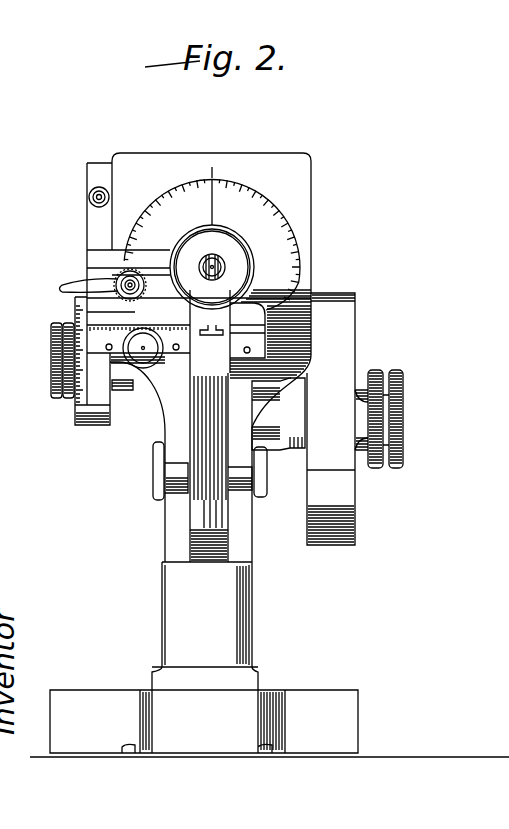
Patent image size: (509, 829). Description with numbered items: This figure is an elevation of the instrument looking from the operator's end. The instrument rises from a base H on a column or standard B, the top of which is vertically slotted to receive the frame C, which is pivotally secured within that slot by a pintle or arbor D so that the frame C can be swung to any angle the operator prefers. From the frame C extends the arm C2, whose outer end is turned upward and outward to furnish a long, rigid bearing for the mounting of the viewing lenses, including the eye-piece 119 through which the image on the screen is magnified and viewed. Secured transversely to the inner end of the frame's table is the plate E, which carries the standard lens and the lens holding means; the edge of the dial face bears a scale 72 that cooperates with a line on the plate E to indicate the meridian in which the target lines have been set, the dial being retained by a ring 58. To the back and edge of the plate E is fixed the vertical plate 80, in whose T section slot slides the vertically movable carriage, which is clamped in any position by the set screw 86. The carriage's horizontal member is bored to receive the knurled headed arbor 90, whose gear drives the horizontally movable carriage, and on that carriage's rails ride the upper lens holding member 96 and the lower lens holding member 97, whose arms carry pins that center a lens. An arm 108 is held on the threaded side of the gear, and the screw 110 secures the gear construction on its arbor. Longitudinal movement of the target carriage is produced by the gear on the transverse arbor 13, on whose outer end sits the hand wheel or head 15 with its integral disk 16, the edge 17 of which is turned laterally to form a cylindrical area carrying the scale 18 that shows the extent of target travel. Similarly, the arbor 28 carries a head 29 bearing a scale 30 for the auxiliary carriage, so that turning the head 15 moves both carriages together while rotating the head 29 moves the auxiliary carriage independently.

The plate E is at (158, 158).
The set screw 86 is at (89, 197).
The vertical plate 80 is at (88, 241).
The upper lens holding member 96 is at (88, 260).
The arm 108 is at (63, 289).
The screw 110 is at (199, 325).
The lower lens holding member 97 is at (100, 308).
The head 29 is at (52, 386).
The scale 30 is at (73, 411).
The arbor 28 is at (130, 381).
The knurled headed arbor 90 is at (150, 362).
The scale 72 is at (254, 201).
The ring 58 is at (213, 260).
The eye-piece 119 is at (215, 266).
The arm C2 is at (210, 426).
The frame C is at (208, 494).
The pintle or arbor D is at (151, 481).
The arbor 13 is at (270, 431).
The scale 18 is at (313, 471).
The disk 16 is at (360, 334).
The edge 17 is at (338, 291).
The hand wheel or head 15 is at (390, 444).
The column or standard B is at (177, 617).
The base H is at (333, 694).